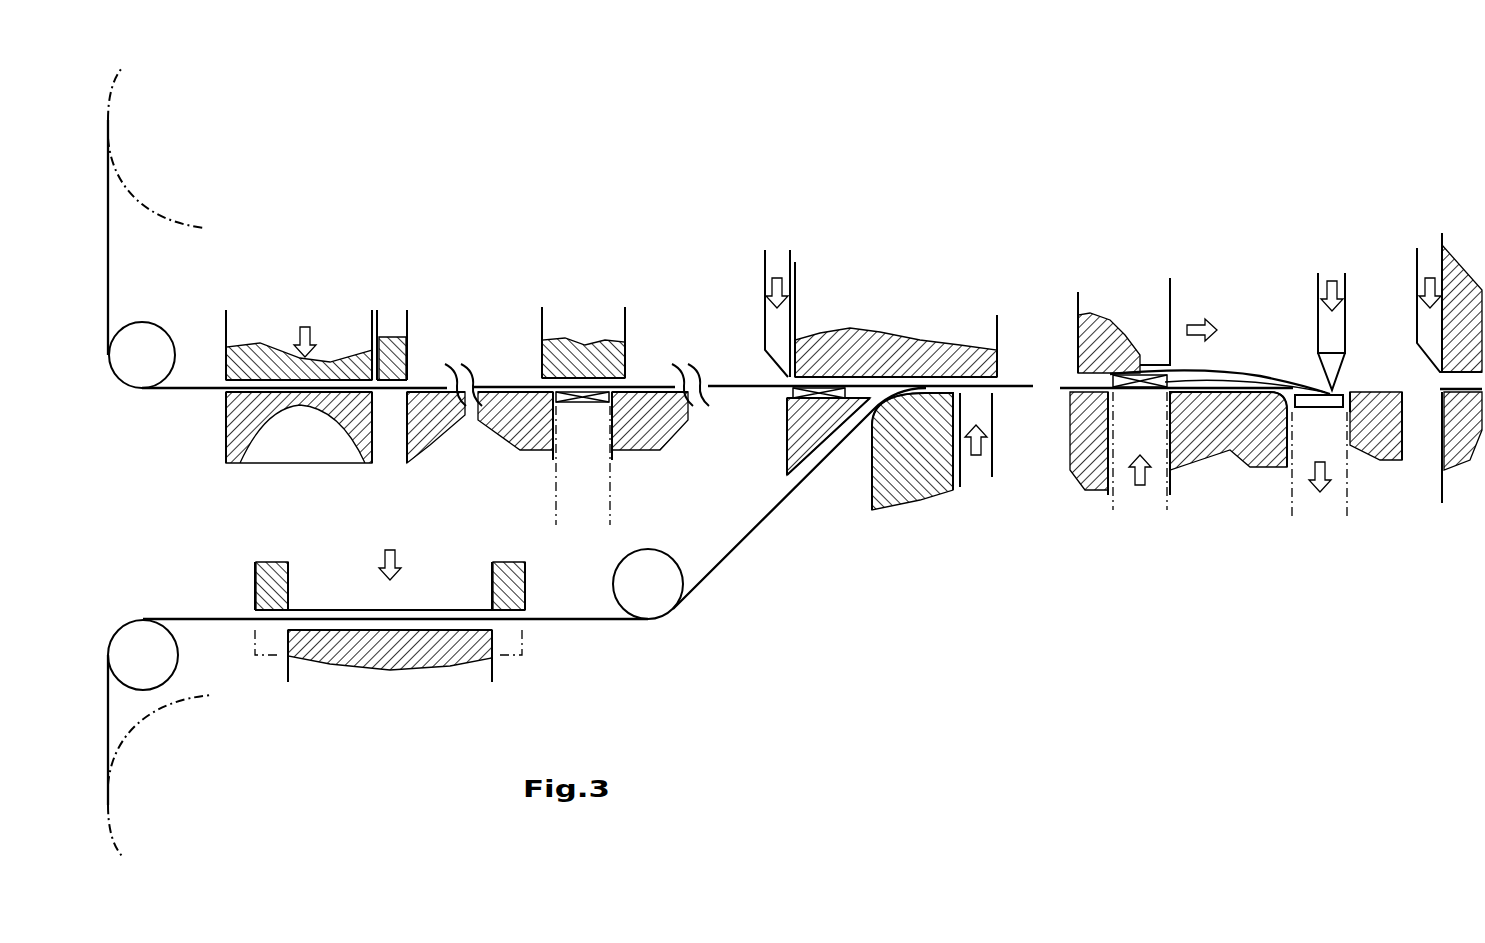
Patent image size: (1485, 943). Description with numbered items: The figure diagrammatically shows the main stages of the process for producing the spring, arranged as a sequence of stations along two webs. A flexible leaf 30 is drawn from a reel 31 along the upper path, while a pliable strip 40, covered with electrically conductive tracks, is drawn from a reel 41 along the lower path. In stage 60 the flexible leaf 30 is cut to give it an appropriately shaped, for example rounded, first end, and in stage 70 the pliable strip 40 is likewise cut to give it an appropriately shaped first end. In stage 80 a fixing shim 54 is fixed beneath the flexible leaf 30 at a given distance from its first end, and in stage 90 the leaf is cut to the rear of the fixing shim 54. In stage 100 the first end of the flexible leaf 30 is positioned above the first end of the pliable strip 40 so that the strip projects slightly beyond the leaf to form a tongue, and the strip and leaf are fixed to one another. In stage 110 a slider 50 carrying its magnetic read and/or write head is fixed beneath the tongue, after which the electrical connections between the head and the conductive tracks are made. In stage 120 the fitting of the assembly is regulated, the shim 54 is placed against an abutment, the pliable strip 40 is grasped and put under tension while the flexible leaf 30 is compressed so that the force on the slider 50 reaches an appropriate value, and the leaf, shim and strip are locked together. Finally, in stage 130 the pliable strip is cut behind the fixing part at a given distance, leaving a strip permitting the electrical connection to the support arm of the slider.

The flexible leaf 30 is at (108, 297).
The reel 31 is at (193, 231).
The pliable strip 40 is at (554, 620).
The reel 41 is at (172, 707).
The slider 50 is at (1313, 409).
The fixing shim 54 is at (596, 403).
The stage 60 is at (337, 298).
The stage 70 is at (346, 572).
The stage 80 is at (590, 305).
The stage 90 is at (778, 258).
The stage 100 is at (1005, 448).
The stage 110 is at (1306, 278).
The stage 120 is at (1184, 275).
The stage 130 is at (1404, 255).